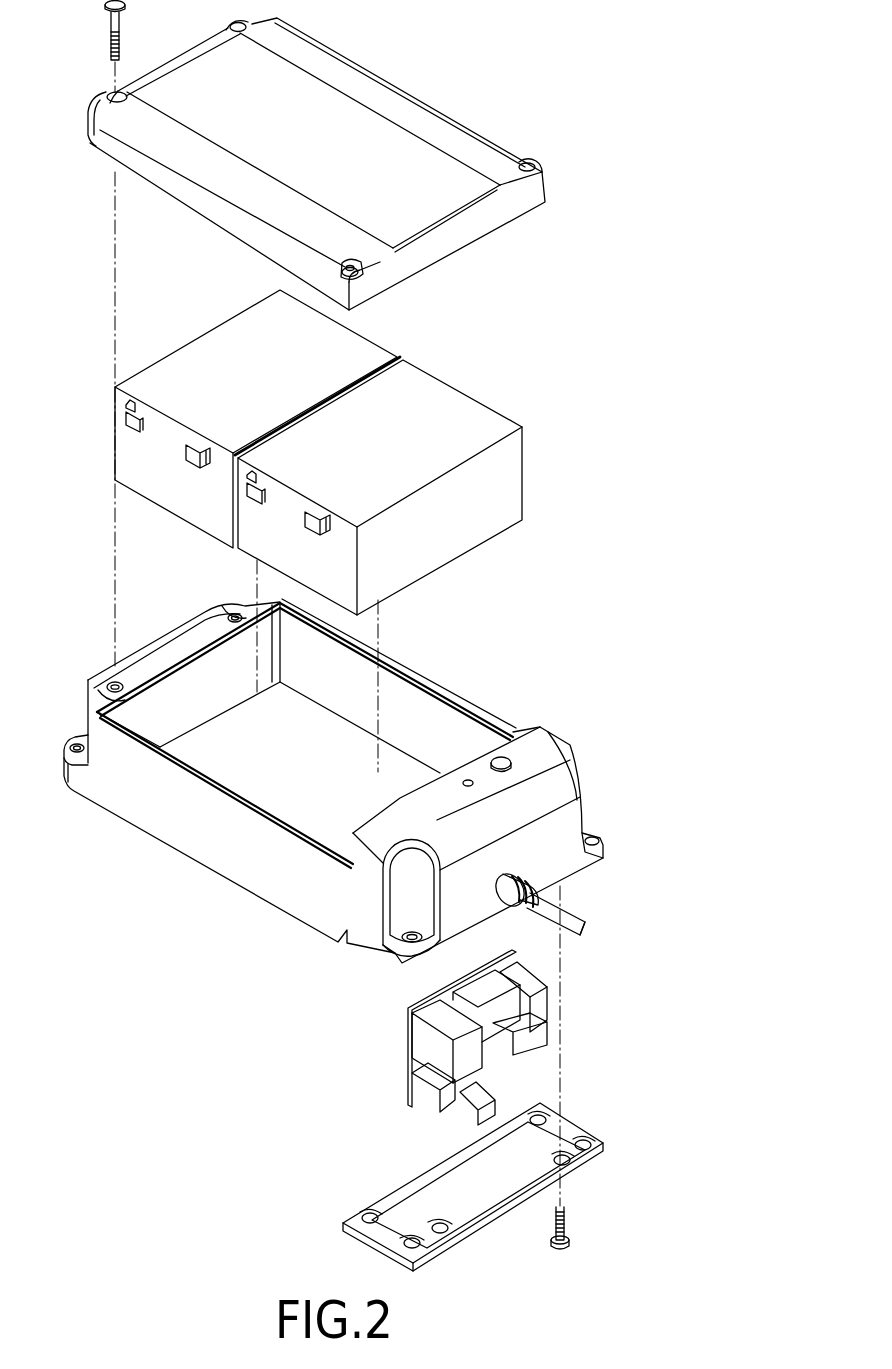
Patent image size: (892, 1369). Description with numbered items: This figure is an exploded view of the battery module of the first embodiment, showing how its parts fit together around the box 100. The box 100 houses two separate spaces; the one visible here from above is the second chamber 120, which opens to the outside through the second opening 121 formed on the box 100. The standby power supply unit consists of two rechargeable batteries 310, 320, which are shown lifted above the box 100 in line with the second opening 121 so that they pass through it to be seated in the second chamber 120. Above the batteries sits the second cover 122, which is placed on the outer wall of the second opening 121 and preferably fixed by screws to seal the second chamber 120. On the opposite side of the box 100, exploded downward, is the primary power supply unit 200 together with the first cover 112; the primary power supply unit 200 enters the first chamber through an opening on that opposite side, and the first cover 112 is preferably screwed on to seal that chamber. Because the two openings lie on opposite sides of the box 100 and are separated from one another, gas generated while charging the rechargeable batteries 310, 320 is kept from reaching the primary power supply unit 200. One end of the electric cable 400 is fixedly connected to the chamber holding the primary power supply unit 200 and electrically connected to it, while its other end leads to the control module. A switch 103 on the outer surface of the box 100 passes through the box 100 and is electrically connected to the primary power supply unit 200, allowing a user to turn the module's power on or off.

The box 100 is at (352, 768).
The switch 103 is at (505, 738).
The first cover 112 is at (443, 1188).
The second chamber 120 is at (222, 680).
The second opening 121 is at (460, 716).
The second cover 122 is at (382, 98).
The primary power supply unit 200 is at (400, 1057).
The rechargeable battery 310 is at (447, 405).
The rechargeable battery 320 is at (348, 350).
The electric cable 400 is at (578, 915).